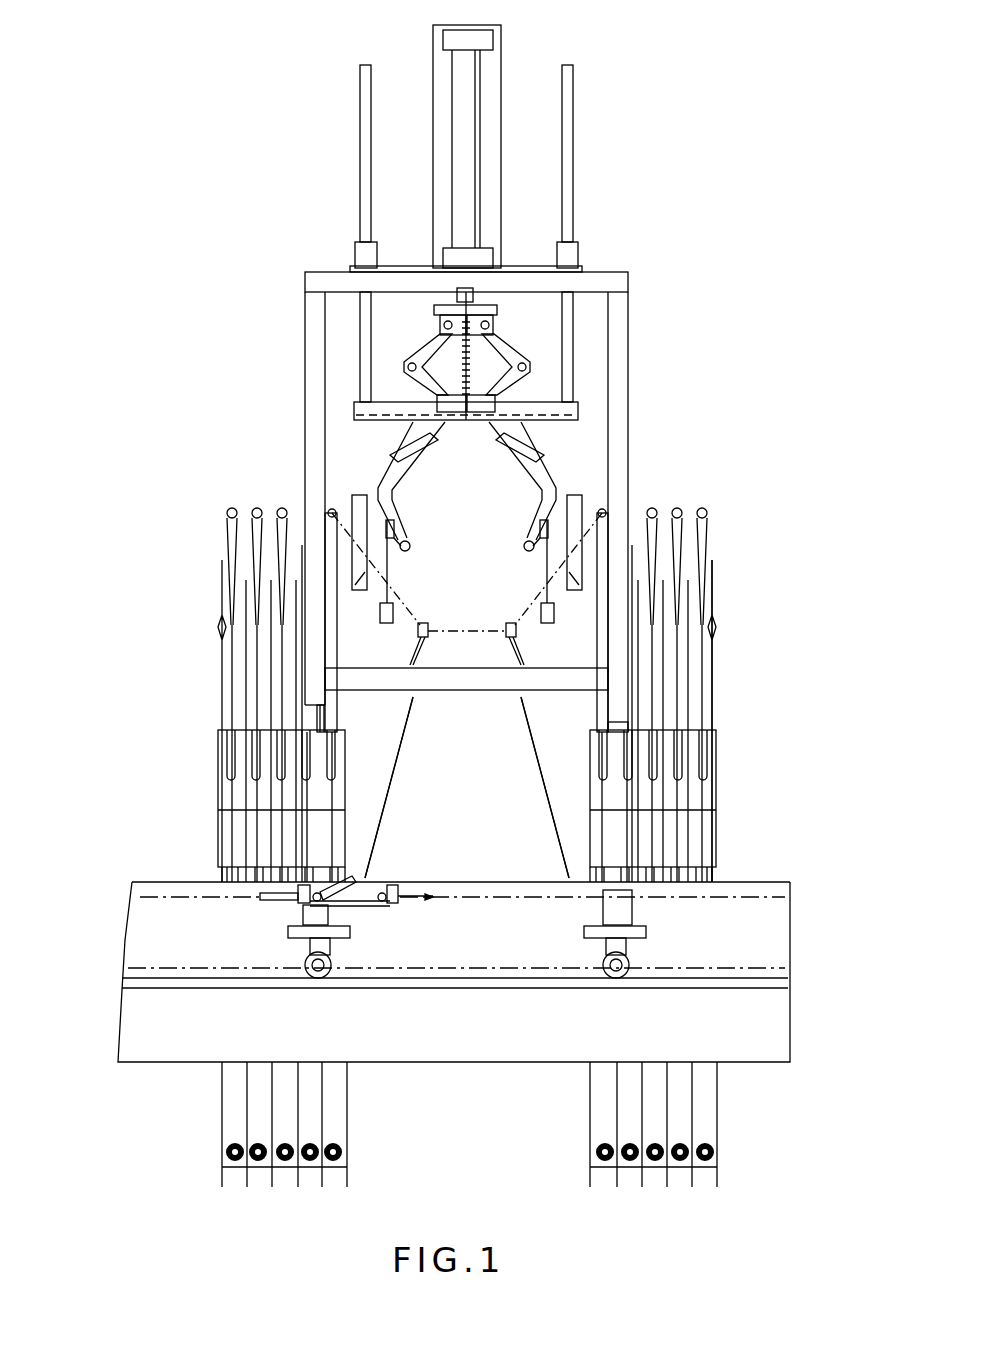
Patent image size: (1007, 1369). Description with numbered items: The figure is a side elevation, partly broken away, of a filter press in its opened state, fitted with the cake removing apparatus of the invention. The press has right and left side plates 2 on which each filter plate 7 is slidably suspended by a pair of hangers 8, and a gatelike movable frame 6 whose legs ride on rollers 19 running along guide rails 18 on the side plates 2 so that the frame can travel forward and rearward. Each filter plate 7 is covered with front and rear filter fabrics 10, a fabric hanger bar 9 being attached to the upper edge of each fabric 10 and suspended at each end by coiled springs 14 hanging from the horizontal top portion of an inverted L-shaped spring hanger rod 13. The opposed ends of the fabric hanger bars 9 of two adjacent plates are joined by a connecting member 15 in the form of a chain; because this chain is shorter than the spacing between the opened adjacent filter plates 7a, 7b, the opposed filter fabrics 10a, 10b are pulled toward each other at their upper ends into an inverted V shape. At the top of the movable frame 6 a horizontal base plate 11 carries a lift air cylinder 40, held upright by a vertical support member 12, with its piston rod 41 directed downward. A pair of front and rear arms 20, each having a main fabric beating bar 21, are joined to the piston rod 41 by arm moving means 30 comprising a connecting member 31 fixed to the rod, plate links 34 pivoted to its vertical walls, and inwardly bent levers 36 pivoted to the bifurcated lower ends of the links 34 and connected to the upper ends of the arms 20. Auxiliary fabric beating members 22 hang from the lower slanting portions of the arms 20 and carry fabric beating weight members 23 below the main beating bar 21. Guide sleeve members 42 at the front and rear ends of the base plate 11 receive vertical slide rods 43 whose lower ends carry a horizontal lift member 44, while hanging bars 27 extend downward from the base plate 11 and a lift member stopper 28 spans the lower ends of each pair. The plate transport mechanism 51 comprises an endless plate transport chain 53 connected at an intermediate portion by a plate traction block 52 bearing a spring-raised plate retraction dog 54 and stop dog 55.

The side plates 2 is at (432, 1062).
The movable frame 6 is at (643, 268).
The filter plate 7 is at (718, 750).
The opened adjacent filter plate 7a is at (590, 765).
The opened adjacent filter plate 7b is at (326, 762).
The hangers 8 is at (345, 840).
The fabric hanger bar 9 is at (514, 666).
The filter fabrics 10 is at (413, 745).
The filter fabric 10a is at (546, 776).
The filter fabric 10b is at (402, 782).
The base plate 11 is at (412, 268).
The vertical support member 12 is at (495, 72).
The spring hanger rod 13 is at (714, 668).
The coiled springs 14 is at (350, 545).
The connecting member 15 is at (458, 666).
The guide rails 18 is at (380, 985).
The rollers 19 is at (305, 980).
The arms 20 is at (406, 478).
The main fabric beating bar 21 is at (410, 546).
The auxiliary fabric beating members 22 is at (393, 565).
The fabric beating weight members 23 is at (381, 614).
The hanging bars 27 is at (355, 500).
The lift member stopper 28 is at (352, 580).
The arm moving means 30 is at (549, 335).
The connecting member 31 is at (497, 310).
The plate links 34 is at (440, 338).
The levers 36 is at (385, 443).
The lift air cylinder 40 is at (473, 120).
The piston rod 41 is at (466, 290).
The guide sleeve members 42 is at (355, 250).
The slide rods 43 is at (362, 170).
The lift member 44 is at (355, 405).
The plate transport mechanism 51 is at (290, 905).
The plate traction block 52 is at (402, 912).
The plate transport chain 53 is at (150, 895).
The plate retraction dog 54 is at (385, 880).
The stop dog 55 is at (350, 913).